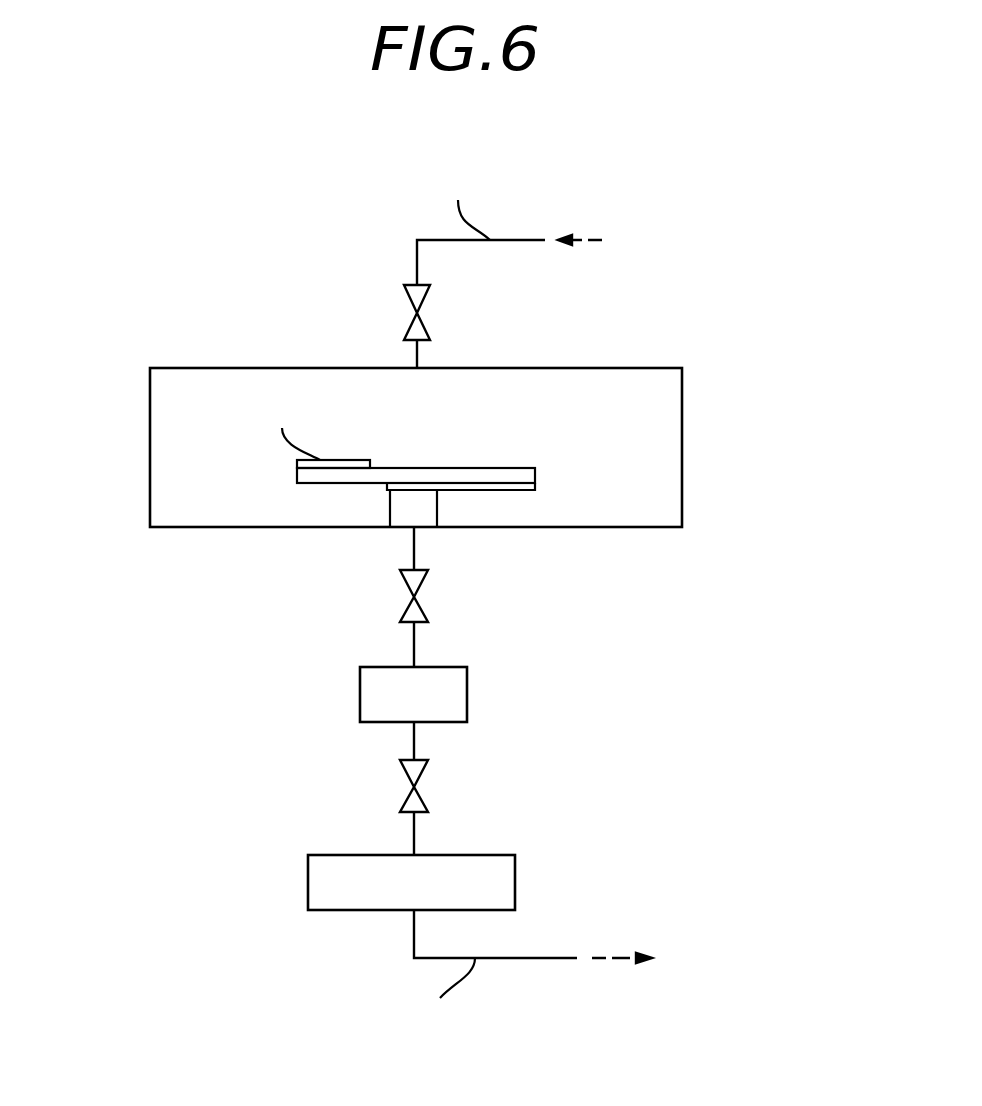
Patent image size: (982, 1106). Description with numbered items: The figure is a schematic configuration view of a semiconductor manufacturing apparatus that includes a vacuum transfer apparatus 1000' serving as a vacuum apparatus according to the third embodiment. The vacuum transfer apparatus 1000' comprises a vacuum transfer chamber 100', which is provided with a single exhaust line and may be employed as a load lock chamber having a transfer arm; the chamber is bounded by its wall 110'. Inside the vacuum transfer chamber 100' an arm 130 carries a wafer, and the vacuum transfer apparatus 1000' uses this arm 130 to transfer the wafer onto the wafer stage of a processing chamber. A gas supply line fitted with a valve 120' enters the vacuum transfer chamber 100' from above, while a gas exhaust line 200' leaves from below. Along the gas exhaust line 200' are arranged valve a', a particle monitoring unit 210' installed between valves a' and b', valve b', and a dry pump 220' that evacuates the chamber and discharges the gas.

The vacuum transfer apparatus 1000' is at (429, 601).
The vacuum transfer chamber 100' is at (363, 407).
The chamber wall 110' is at (363, 447).
The valve 120' is at (422, 312).
The arm 130 is at (535, 484).
The gas exhaust line 200' is at (465, 781).
The particle monitoring unit 210' is at (360, 693).
The dry pump 220' is at (364, 882).